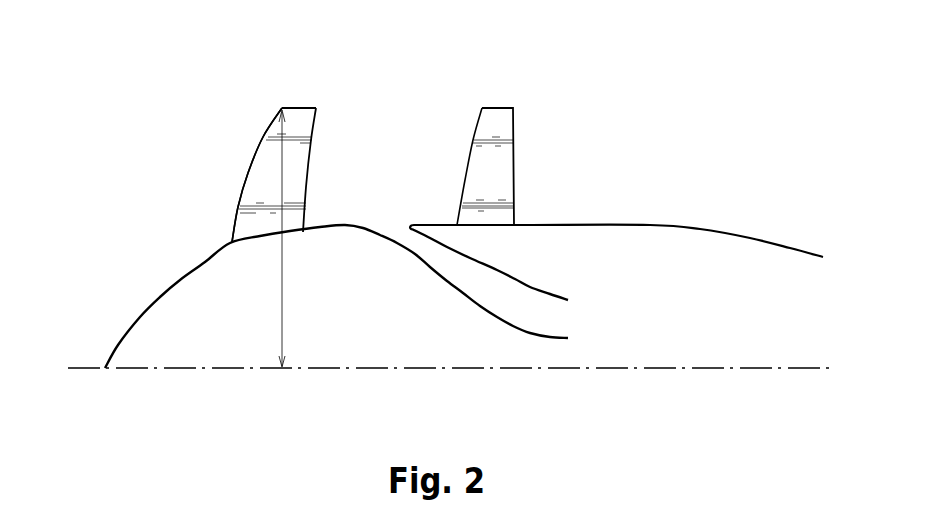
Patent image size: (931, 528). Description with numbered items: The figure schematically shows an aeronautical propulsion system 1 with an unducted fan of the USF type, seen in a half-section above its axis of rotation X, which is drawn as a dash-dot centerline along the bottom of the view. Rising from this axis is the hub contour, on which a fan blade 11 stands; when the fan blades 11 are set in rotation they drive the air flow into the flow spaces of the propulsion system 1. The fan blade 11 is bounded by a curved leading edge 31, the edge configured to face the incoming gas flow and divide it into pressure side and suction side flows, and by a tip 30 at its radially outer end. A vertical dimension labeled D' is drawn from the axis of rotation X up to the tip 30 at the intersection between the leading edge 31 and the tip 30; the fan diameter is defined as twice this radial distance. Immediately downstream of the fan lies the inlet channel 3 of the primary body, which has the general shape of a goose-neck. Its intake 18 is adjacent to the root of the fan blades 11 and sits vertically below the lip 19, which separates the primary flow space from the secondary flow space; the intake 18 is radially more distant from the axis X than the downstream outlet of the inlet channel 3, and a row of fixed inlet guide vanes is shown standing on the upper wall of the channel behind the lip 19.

The propulsion system 1 is at (108, 197).
The inlet channel 3 is at (618, 268).
The fan blades 11 is at (258, 192).
The intake 18 is at (392, 219).
The lip 19 is at (442, 233).
The tip 30 is at (299, 108).
The leading edge 31 is at (250, 133).
The axis of rotation X is at (72, 372).
The fan diameter D' is at (286, 238).